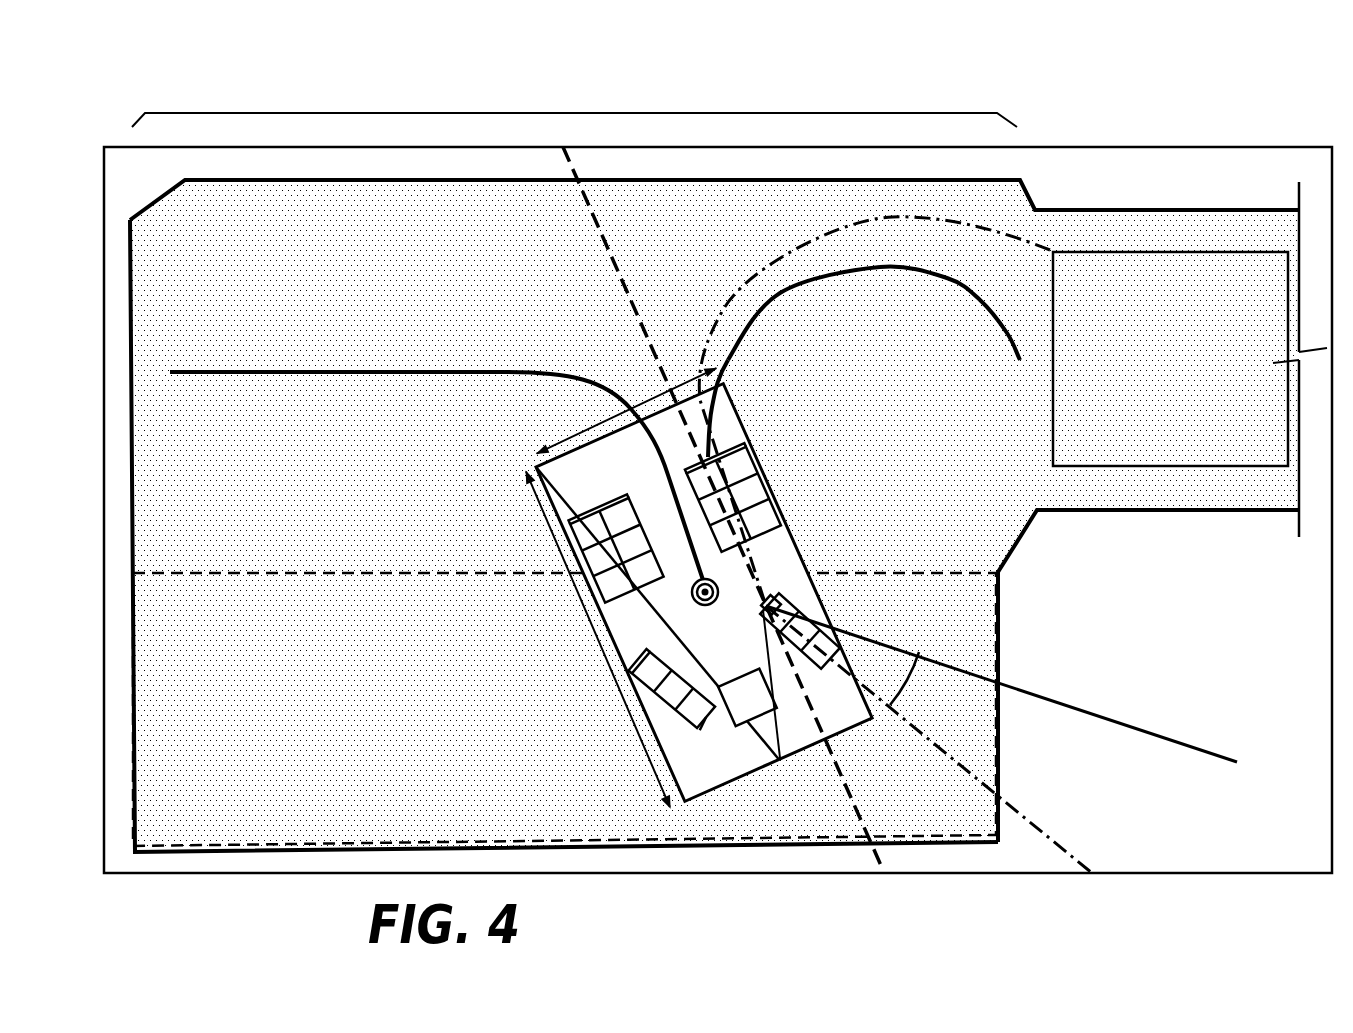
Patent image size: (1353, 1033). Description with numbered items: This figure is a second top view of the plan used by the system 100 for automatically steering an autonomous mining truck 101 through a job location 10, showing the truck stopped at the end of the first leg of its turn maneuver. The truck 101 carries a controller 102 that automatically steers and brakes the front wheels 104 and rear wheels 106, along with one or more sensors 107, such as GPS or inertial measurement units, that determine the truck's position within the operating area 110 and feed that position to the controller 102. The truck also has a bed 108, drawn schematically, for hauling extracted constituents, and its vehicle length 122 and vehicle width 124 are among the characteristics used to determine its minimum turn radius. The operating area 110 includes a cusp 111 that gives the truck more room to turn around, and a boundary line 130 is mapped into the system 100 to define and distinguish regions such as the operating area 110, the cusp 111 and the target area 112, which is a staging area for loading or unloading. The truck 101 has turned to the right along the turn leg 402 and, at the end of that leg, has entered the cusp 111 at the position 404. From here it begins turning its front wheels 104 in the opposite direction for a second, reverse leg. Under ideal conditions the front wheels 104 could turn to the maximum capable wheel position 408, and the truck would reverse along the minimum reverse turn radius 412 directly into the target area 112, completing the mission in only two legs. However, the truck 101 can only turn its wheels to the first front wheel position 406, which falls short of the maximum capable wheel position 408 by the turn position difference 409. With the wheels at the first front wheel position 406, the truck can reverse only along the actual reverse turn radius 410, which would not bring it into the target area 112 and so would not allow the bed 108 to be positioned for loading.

The job location 10 is at (455, 333).
The system 100 is at (1136, 88).
The autonomous mining truck 101 is at (691, 780).
The controller 102 is at (780, 758).
The front wheels 104 is at (702, 710).
The rear wheels 106 is at (753, 489).
The sensors 107 is at (717, 585).
The bed 108 is at (723, 421).
The operating area 110 is at (524, 113).
The cusp 111 is at (947, 572).
The target area 112 is at (1170, 252).
The vehicle length 122 is at (602, 650).
The vehicle width 124 is at (641, 400).
The boundary line 130 is at (1245, 210).
The turn leg 402 is at (398, 375).
The position 404 is at (476, 692).
The first front wheel position 406 is at (1062, 840).
The maximum capable wheel position 408 is at (1194, 740).
The turn position difference 409 is at (922, 683).
The actual reverse turn radius 410 is at (1024, 230).
The minimum reverse turn radius 412 is at (945, 270).